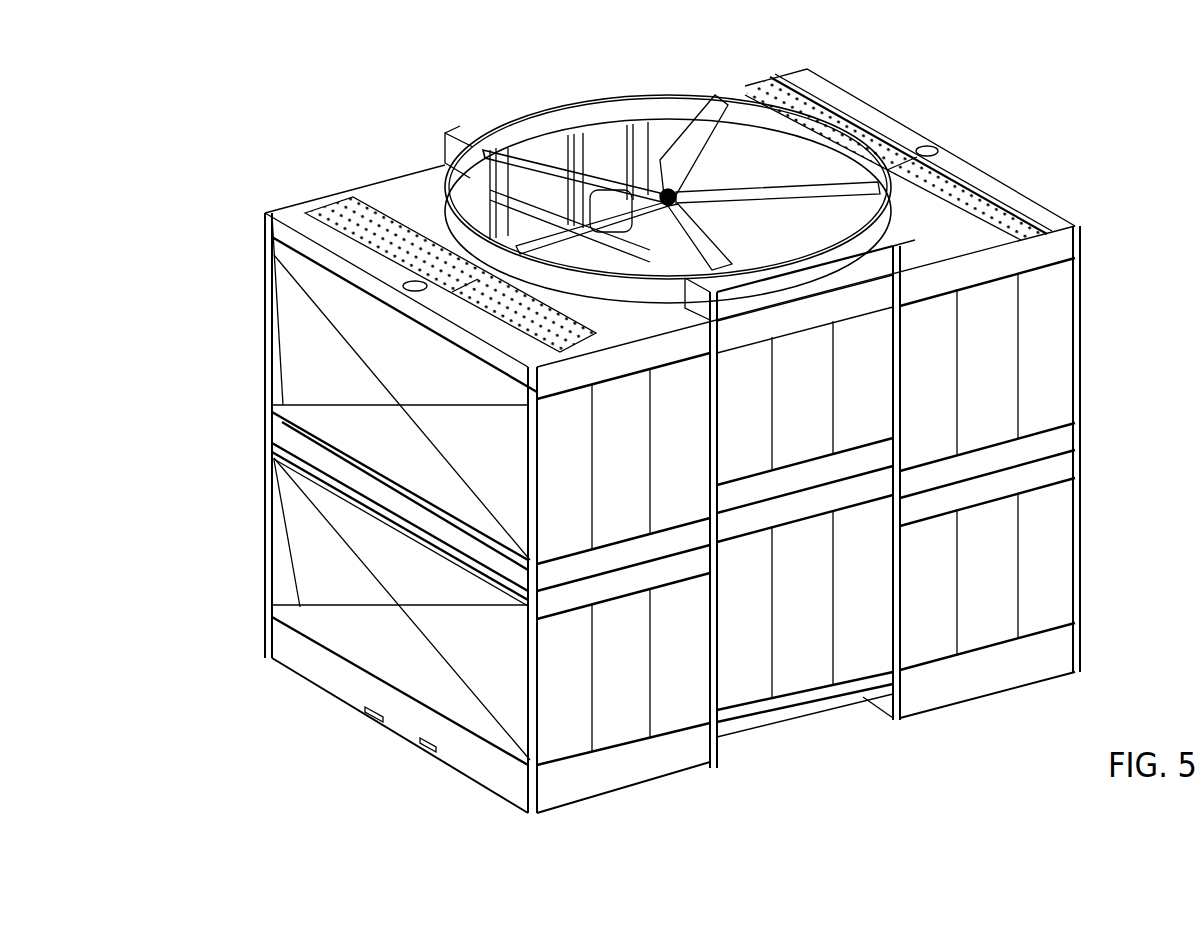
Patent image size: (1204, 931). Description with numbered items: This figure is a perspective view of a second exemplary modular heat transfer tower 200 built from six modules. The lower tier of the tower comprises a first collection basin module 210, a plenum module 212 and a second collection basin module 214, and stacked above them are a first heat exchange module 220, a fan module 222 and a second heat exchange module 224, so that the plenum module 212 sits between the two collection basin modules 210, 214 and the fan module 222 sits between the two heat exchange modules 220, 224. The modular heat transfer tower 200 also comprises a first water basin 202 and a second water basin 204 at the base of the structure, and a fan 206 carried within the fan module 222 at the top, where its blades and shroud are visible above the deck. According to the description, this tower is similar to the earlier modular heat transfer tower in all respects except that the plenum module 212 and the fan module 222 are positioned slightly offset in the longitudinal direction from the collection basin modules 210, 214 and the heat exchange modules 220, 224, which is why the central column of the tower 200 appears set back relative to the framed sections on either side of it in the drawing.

The modular heat transfer tower 200 is at (1014, 125).
The first water basin 202 is at (480, 767).
The second water basin 204 is at (1057, 651).
The fan 206 is at (725, 130).
The first collection basin module 210 is at (268, 568).
The plenum module 212 is at (830, 708).
The second collection basin module 214 is at (1082, 534).
The first heat exchange module 220 is at (268, 380).
The fan module 222 is at (587, 95).
The second heat exchange module 224 is at (1082, 341).